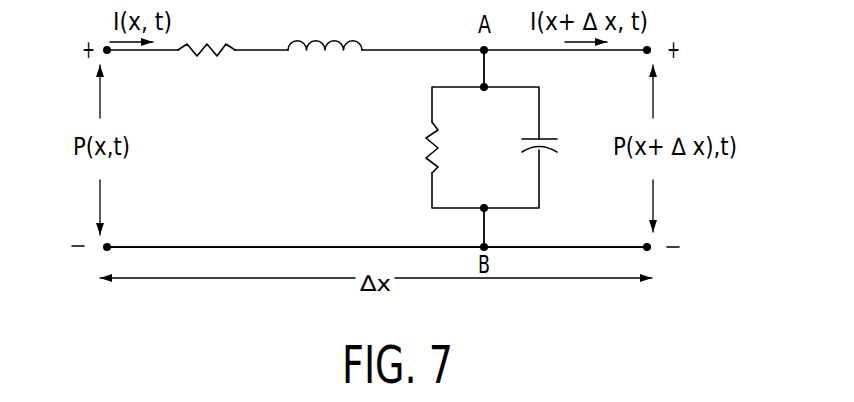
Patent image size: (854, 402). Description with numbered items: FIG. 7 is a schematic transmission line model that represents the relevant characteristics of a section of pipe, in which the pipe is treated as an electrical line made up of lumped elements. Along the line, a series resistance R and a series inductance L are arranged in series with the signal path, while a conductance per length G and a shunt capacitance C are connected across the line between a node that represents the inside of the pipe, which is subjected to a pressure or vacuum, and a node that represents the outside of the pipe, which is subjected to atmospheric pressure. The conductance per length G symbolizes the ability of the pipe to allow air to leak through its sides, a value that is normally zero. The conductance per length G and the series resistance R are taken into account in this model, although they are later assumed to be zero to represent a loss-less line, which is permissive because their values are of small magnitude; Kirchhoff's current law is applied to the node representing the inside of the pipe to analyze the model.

The series resistance RΔx R is at (206, 66).
The series inductance LΔx L is at (325, 65).
The conductance per length G is at (408, 139).
The shunt capacitance CΔx C is at (559, 129).